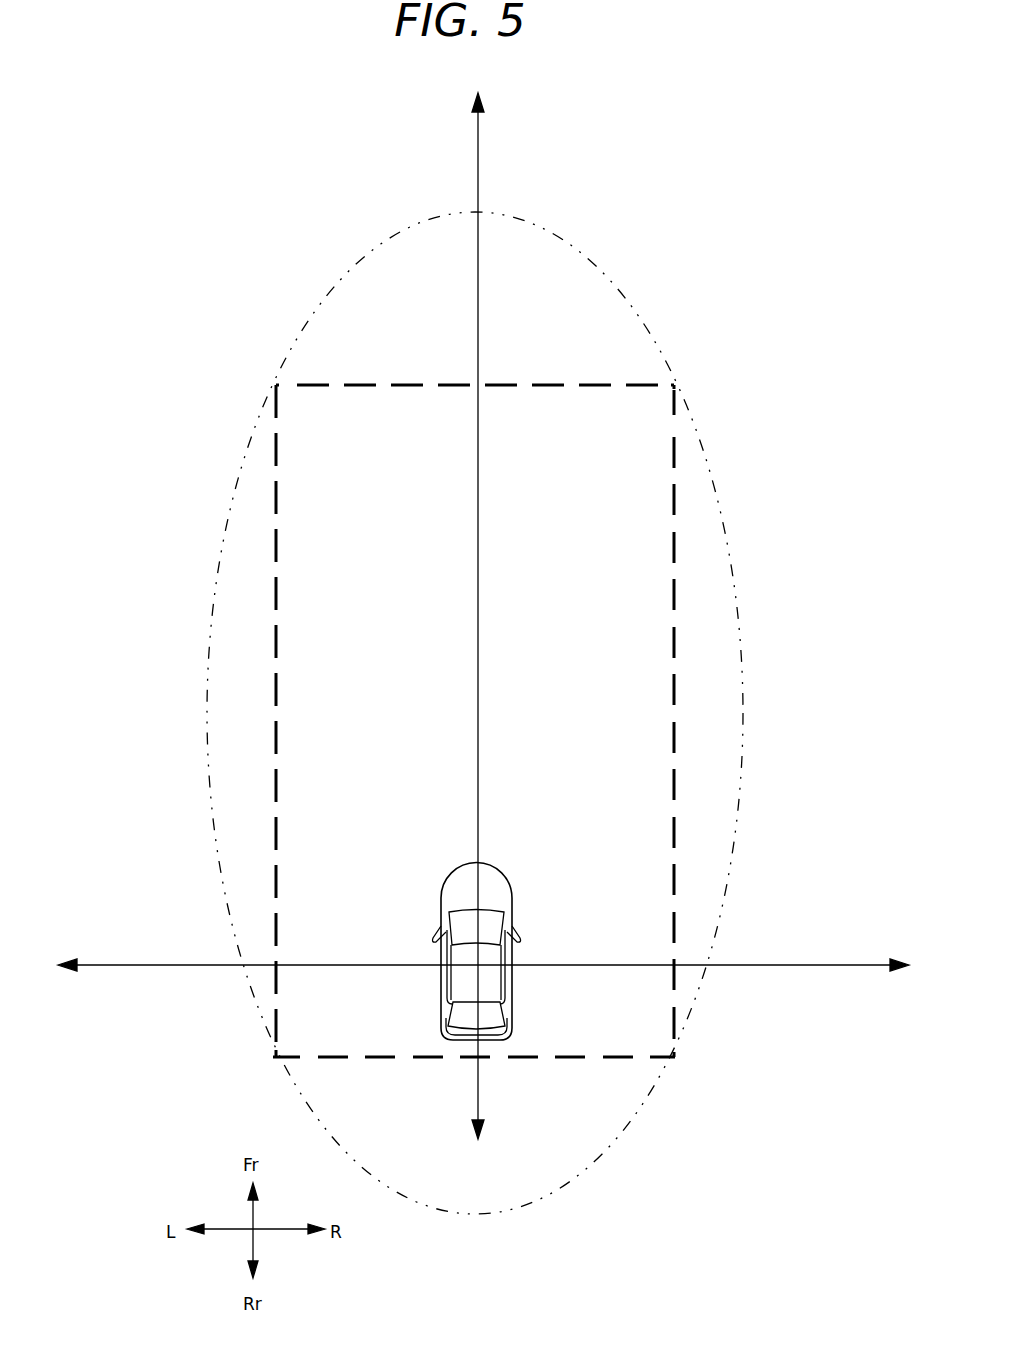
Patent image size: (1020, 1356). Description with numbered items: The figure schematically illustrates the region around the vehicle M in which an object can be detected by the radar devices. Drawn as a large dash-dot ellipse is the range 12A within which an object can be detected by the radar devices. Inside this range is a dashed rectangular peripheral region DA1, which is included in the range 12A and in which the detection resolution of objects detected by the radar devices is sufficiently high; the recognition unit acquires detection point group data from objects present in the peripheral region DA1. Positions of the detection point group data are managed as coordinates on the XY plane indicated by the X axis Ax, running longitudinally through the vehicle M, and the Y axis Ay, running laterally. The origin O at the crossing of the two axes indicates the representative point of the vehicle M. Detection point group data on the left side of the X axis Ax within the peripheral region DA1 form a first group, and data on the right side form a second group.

The X axis Ax is at (478, 143).
The Y axis Ay is at (90, 965).
The range 12A is at (638, 308).
The peripheral region DA1 is at (674, 422).
The vehicle M is at (506, 880).
The origin O is at (478, 966).